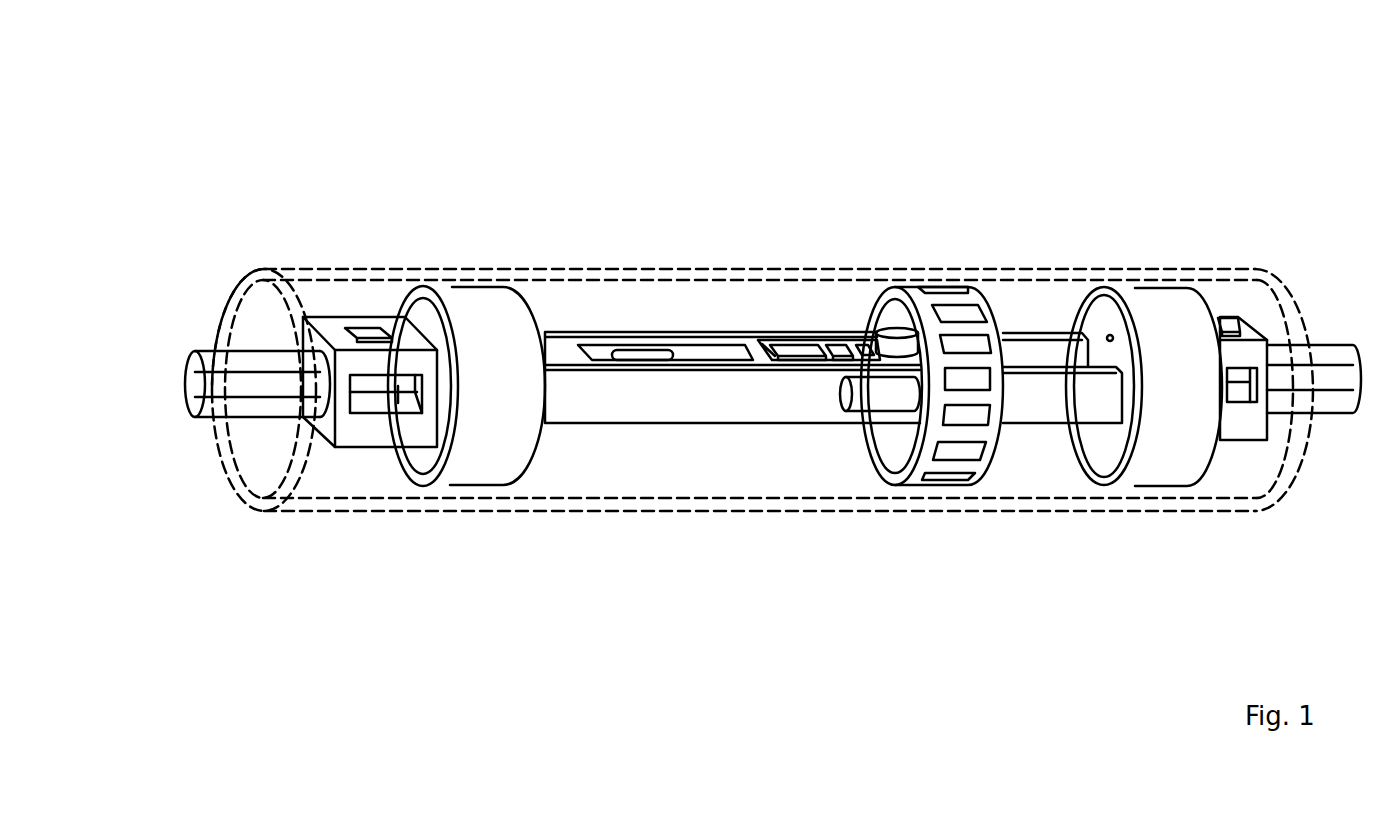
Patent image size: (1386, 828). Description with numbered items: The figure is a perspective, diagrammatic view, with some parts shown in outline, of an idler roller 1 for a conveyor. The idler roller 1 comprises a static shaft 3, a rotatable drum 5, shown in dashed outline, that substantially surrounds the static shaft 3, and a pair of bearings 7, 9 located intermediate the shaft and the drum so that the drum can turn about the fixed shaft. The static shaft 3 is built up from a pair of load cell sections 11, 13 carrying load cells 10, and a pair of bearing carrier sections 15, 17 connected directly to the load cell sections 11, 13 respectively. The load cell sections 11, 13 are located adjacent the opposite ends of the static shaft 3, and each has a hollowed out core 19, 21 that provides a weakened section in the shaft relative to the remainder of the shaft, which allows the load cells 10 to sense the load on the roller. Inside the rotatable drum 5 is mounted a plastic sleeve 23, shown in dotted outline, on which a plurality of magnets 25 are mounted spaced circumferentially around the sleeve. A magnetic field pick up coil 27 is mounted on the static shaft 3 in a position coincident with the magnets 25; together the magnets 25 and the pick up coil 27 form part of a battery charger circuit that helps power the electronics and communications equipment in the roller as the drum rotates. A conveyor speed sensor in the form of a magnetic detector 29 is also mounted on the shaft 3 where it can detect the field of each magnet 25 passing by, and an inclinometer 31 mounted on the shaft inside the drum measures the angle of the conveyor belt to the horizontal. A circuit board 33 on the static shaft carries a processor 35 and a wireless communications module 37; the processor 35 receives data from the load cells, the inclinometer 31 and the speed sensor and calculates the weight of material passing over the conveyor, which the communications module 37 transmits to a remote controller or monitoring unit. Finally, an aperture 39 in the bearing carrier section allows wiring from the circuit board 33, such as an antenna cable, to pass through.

The idler roller 1 is at (1272, 115).
The static shaft 3 is at (195, 388).
The rotatable drum 5 is at (242, 498).
The bearing 7 is at (470, 466).
The bearing 9 is at (1143, 472).
The load cell 10 is at (390, 330).
The load cell section 11 is at (345, 317).
The load cell section 13 is at (1265, 317).
The bearing carrier section 15 is at (460, 330).
The bearing carrier section 17 is at (1093, 313).
The hollowed out core 19 is at (397, 386).
The hollowed out core 21 is at (1240, 380).
The plastic sleeve 23 is at (312, 283).
The magnet 25 is at (990, 318).
The magnetic field pick up coil 27 is at (896, 335).
The magnetic detector 29 is at (900, 402).
The inclinometer 31 is at (650, 355).
The circuit board 33 is at (772, 343).
The processor 35 is at (808, 348).
The wireless communications module 37 is at (846, 350).
The aperture 39 is at (1113, 335).